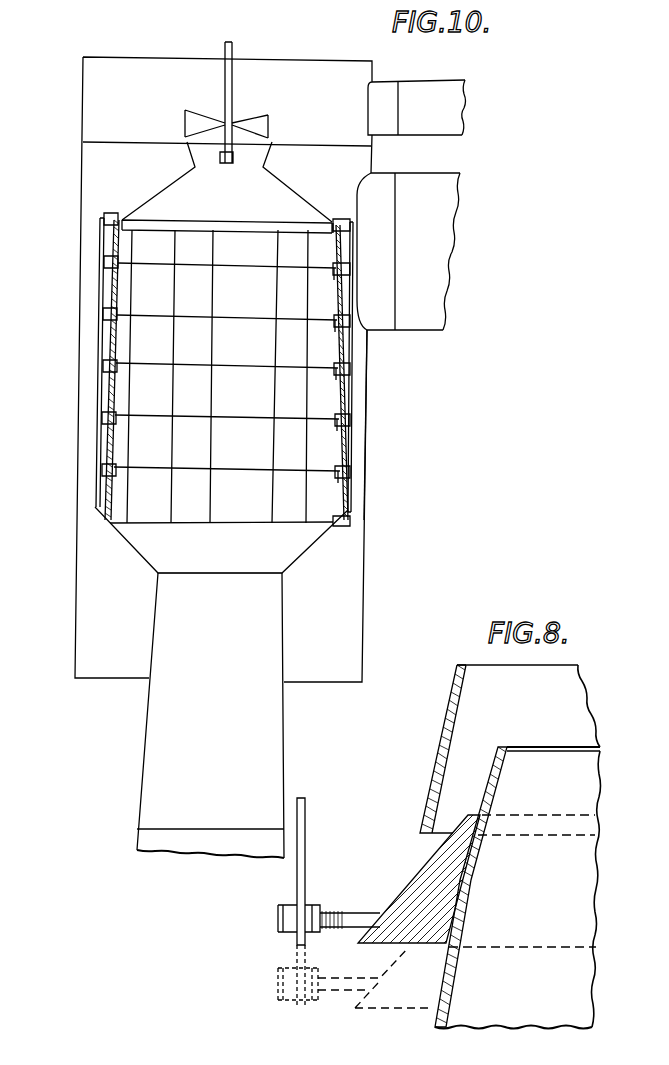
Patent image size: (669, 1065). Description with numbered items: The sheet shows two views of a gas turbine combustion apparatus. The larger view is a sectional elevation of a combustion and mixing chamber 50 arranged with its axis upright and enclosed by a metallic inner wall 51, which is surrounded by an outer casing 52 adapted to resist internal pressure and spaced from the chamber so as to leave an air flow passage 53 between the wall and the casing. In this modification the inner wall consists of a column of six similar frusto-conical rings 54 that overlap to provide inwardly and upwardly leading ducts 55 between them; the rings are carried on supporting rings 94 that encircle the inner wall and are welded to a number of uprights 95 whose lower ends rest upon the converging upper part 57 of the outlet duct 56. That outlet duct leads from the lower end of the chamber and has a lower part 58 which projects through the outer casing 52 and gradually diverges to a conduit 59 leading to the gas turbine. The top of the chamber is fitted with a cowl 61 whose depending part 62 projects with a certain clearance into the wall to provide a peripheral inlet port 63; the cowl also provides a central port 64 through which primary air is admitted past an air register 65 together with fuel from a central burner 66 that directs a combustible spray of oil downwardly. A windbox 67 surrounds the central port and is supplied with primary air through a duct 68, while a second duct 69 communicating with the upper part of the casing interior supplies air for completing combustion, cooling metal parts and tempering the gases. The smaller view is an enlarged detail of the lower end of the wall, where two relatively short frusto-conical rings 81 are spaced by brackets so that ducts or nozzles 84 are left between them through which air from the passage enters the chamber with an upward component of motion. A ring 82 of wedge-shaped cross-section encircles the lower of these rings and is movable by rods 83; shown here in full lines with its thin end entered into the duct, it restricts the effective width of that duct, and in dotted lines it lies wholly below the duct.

In FIG. 10, the combustion and mixing chamber 50 is at (232, 442).
In FIG. 8, the combustion and mixing chamber 50 is at (508, 696).
In FIG. 10, the metallic inner wall 51 is at (112, 442).
In FIG. 10, the outer casing 52 is at (367, 492).
In FIG. 10, the air flow passage 53 is at (362, 422).
In FIG. 10, the frusto-conical rings 54 is at (337, 397).
In FIG. 10, the ducts 55 is at (337, 375).
In FIG. 10, the outlet duct 56 is at (257, 602).
In FIG. 10, the upper sharply converging part 57 is at (317, 543).
In FIG. 10, the lower part 58 is at (275, 725).
In FIG. 10, the conduit 59 is at (147, 839).
In FIG. 10, the cowl 61 is at (153, 195).
In FIG. 10, the depending part 62 is at (115, 228).
In FIG. 10, the peripheral inlet port 63 is at (120, 218).
In FIG. 10, the central port 64 is at (212, 152).
In FIG. 10, the air register 65 is at (192, 125).
In FIG. 10, the central burner 66 is at (247, 150).
In FIG. 10, the windbox 67 is at (313, 70).
In FIG. 10, the duct 68 is at (385, 90).
In FIG. 10, the second duct 69 is at (385, 185).
In FIG. 8, the frusto-conical rings 81 is at (450, 715).
In FIG. 8, the ring of wedge-shaped cross-section 82 is at (418, 876).
In FIG. 8, the rods 83 is at (300, 885).
In FIG. 8, the ducts or nozzles 84 is at (470, 766).
In FIG. 10, the supporting rings 94 is at (102, 318).
In FIG. 10, the uprights 95 is at (98, 382).